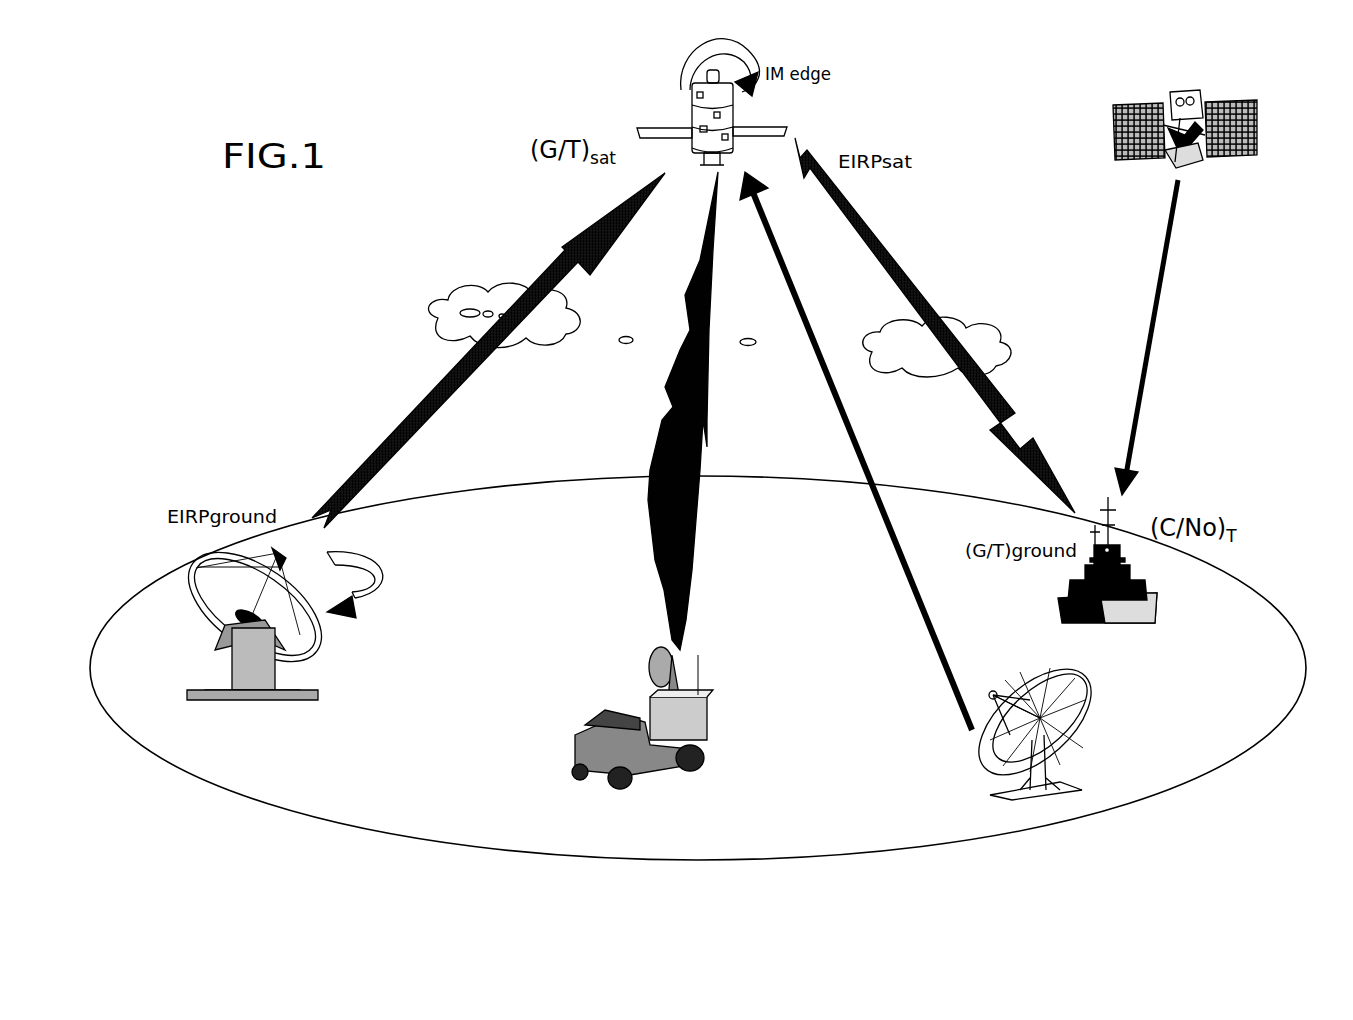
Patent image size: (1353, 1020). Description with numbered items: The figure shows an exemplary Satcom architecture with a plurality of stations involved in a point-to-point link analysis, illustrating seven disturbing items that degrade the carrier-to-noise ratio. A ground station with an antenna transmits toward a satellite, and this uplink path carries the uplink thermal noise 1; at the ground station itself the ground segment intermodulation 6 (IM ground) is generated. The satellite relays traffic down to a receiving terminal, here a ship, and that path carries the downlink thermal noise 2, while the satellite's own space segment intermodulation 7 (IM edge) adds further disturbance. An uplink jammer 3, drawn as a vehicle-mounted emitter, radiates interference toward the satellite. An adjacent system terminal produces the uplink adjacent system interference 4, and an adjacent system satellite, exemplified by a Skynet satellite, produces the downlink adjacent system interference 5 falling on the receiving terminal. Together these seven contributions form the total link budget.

The uplink thermal noise 1 is at (455, 383).
The downlink thermal noise 2 is at (895, 275).
The uplink jammer 3 is at (734, 530).
The uplink adjacent system interference 4 is at (949, 775).
The downlink adjacent system interference 5 is at (1303, 147).
The ground segment intermodulation 6 is at (373, 662).
The space segment intermodulation 7 is at (660, 80).